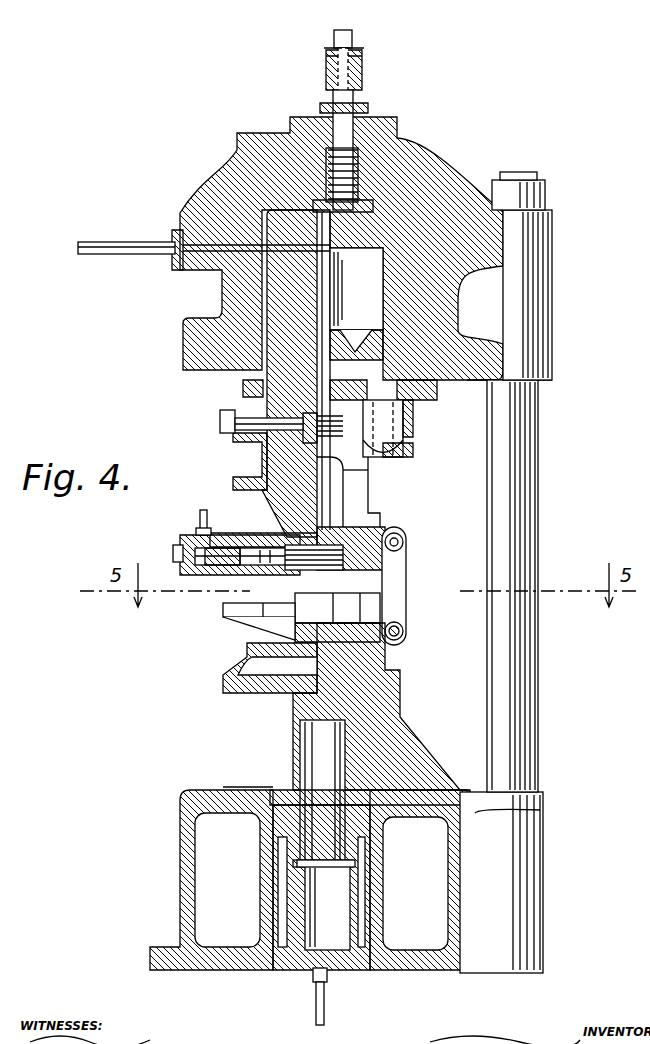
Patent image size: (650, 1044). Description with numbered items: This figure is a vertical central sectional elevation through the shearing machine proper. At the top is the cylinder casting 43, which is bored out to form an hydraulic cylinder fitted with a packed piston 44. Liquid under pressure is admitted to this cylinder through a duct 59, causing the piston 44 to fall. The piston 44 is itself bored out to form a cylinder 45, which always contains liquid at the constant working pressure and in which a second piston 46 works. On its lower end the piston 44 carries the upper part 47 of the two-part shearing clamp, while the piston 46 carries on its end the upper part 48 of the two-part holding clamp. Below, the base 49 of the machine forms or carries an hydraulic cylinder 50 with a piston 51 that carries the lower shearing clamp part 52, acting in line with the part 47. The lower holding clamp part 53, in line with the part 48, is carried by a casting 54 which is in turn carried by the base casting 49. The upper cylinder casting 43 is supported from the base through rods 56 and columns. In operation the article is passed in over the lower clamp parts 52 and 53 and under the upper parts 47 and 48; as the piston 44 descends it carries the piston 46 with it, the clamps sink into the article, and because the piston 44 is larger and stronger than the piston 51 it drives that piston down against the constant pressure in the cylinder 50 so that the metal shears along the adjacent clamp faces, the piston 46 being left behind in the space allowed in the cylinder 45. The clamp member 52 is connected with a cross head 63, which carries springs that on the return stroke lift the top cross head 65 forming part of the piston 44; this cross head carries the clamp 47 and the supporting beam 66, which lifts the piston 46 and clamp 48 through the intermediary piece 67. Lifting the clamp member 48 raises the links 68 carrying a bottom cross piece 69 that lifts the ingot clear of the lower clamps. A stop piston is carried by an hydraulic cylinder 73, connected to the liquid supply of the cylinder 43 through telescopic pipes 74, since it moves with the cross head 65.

The cylinder casting 43 is at (183, 338).
The piston 44 is at (260, 374).
The cylinder 45 is at (356, 304).
The piston 46 is at (375, 404).
The shearing clamp part 47 is at (318, 576).
The holding clamp part 48 is at (353, 570).
The base 49 is at (182, 877).
The hydraulic cylinder 50 is at (321, 887).
The piston 51 is at (300, 752).
The shearing clamp part 52 is at (327, 610).
The holding clamp part 53 is at (348, 607).
The casting 54 is at (392, 707).
The rods 56 is at (532, 688).
The duct 59 is at (128, 232).
The cross head 63 is at (250, 690).
The top cross head 65 is at (260, 460).
The supporting beam 66 is at (347, 428).
The intermediary piece 67 is at (360, 488).
The links 68 is at (395, 583).
The bottom cross piece 69 is at (401, 634).
The hydraulic cylinder 73 is at (230, 571).
The telescopic pipes 74 is at (200, 517).